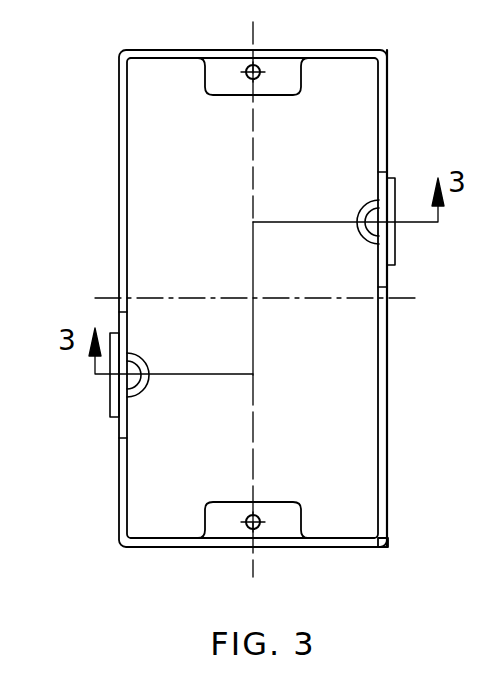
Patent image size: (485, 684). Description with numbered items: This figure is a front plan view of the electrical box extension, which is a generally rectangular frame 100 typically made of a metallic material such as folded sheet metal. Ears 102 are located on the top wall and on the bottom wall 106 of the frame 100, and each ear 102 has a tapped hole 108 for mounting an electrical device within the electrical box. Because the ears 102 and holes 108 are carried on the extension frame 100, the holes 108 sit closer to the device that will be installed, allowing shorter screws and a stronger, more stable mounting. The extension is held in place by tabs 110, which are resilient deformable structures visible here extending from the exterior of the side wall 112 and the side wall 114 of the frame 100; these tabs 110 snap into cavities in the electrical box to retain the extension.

The frame 100 is at (100, 220).
The ears 102 is at (222, 80).
The bottom wall 106 is at (185, 546).
The tapped holes 108 is at (258, 67).
The tabs 110 is at (395, 237).
The side wall 112 is at (118, 490).
The side wall 114 is at (387, 481).